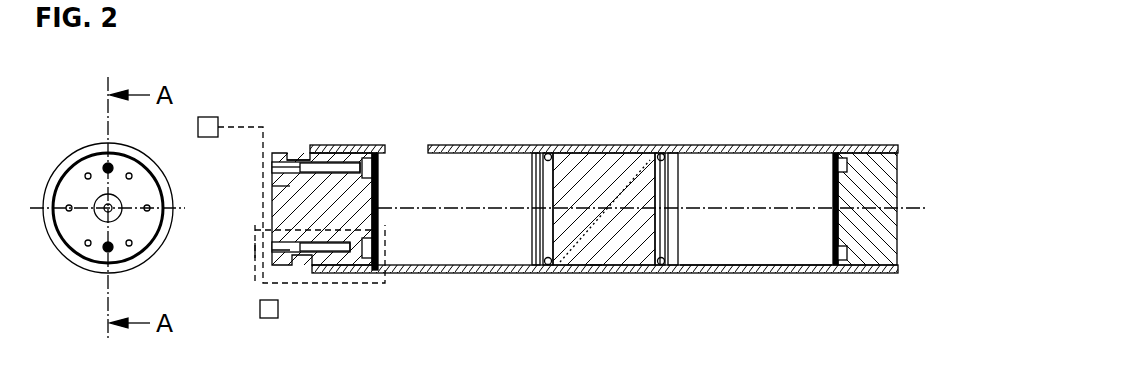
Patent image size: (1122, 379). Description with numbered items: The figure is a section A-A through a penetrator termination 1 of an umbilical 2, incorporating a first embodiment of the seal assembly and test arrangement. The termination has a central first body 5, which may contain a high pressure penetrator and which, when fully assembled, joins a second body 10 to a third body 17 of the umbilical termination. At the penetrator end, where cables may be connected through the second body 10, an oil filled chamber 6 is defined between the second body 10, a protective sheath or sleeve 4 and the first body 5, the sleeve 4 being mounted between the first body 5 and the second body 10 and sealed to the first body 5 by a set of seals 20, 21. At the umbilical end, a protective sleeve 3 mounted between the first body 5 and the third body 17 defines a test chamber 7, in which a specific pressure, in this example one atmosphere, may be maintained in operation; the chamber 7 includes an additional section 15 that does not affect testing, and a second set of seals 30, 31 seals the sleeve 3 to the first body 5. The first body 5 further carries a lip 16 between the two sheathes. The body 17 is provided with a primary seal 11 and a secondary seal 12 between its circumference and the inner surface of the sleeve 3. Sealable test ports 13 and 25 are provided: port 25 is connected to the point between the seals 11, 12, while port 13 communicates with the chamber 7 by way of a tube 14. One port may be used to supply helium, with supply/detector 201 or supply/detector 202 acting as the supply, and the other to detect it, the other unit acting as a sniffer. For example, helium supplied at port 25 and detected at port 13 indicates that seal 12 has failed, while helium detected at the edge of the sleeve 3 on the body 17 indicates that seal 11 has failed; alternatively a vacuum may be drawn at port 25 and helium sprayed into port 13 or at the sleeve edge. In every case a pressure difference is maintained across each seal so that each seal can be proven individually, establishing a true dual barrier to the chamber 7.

The penetrator termination 1 is at (578, 122).
The umbilical 2 is at (280, 146).
The protective sleeve 3 is at (65, 160).
The sleeve 4 is at (758, 128).
The first body 5 is at (606, 160).
The oil filled chamber 6 is at (738, 262).
The test chamber 7 is at (477, 266).
The second body 10 is at (866, 181).
The primary seal 11 is at (338, 160).
The secondary seal 12 is at (368, 157).
The sealable test port 13 is at (262, 172).
The tube 14 is at (305, 158).
The additional section 15 is at (385, 170).
The lip 16 is at (608, 273).
The third body 17 is at (262, 186).
The seal 20 is at (634, 146).
The seal 21 is at (660, 146).
The sealable test port 25 is at (262, 250).
The seal 30 is at (548, 266).
The seal 31 is at (575, 266).
The supply/detector 201 is at (212, 117).
The supply/detector 202 is at (262, 318).